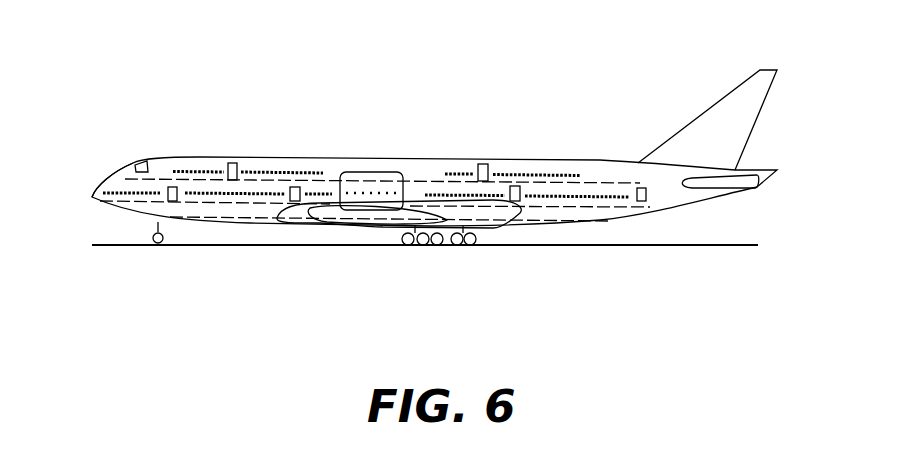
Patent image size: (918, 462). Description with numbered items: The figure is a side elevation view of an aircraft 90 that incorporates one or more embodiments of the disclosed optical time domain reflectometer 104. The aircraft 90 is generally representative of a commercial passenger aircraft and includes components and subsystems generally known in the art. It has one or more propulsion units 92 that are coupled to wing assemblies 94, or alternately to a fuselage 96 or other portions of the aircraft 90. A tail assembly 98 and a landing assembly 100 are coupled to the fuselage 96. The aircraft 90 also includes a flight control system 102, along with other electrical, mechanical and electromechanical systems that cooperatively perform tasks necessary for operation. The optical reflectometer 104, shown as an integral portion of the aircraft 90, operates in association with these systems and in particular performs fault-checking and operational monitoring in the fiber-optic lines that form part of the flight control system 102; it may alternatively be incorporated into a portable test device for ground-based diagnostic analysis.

The aircraft 90 is at (432, 170).
The propulsion units 92 is at (292, 223).
The wing assemblies 94 is at (375, 228).
The fuselage 96 is at (568, 160).
The tail assembly 98 is at (771, 120).
The landing assembly 100 is at (480, 267).
The flight control system 102 is at (97, 163).
The optical time domain reflectometer 104 is at (84, 178).